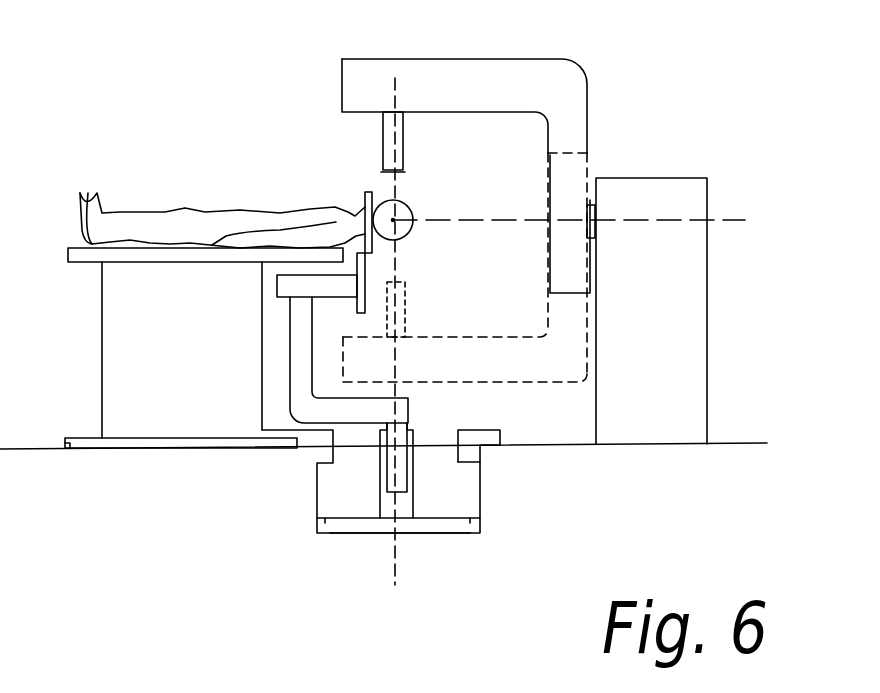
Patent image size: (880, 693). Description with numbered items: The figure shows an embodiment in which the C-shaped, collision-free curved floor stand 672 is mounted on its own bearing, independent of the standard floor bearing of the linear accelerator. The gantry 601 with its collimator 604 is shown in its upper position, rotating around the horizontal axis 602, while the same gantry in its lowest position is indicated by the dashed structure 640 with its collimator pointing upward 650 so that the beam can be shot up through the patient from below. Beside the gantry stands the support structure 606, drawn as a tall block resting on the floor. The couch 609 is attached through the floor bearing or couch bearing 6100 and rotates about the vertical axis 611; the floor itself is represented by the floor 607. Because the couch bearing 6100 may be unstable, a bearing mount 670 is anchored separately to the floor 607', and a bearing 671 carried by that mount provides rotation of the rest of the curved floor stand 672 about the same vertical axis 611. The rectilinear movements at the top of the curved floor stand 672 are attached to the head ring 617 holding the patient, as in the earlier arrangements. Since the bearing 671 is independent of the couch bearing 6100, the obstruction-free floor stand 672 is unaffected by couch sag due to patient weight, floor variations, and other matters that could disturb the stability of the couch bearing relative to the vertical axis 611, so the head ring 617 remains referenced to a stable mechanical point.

The gantry 601 is at (443, 58).
The horizontal axis 602 is at (728, 215).
The collimator 604 is at (383, 137).
The support column 606 is at (640, 175).
The floor 607 is at (399, 417).
The floor 607' is at (375, 570).
The couch 609 is at (102, 313).
The vertical axis 611 is at (400, 557).
The head ring 617 is at (363, 195).
The dashed structure 640 is at (508, 383).
The collimator pointing upward 650 is at (405, 303).
The bearing mount 670 is at (347, 506).
The bearing 671 is at (380, 468).
The curved floor stand 672 is at (287, 390).
The floor bearing or couch bearing 6100 is at (500, 437).